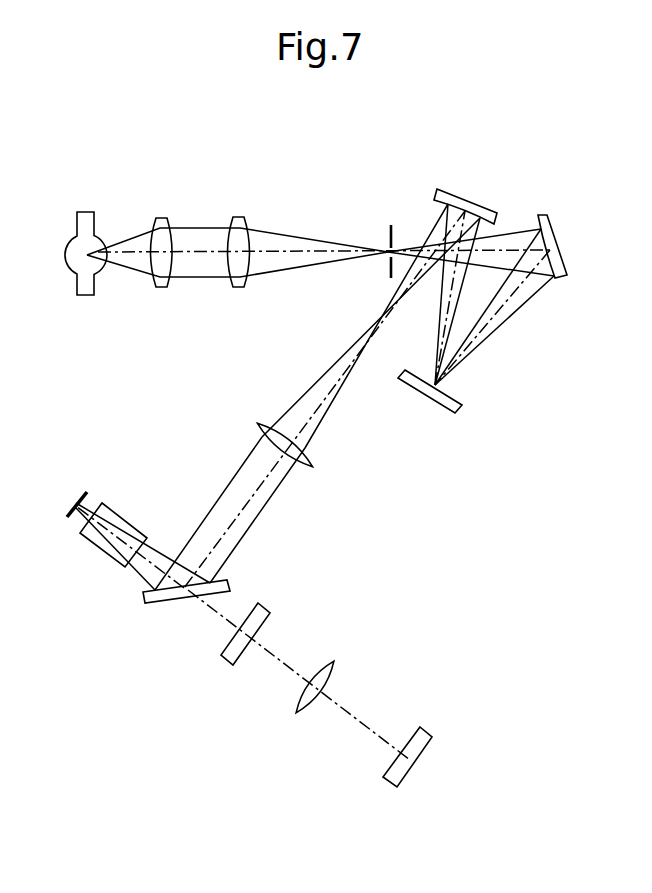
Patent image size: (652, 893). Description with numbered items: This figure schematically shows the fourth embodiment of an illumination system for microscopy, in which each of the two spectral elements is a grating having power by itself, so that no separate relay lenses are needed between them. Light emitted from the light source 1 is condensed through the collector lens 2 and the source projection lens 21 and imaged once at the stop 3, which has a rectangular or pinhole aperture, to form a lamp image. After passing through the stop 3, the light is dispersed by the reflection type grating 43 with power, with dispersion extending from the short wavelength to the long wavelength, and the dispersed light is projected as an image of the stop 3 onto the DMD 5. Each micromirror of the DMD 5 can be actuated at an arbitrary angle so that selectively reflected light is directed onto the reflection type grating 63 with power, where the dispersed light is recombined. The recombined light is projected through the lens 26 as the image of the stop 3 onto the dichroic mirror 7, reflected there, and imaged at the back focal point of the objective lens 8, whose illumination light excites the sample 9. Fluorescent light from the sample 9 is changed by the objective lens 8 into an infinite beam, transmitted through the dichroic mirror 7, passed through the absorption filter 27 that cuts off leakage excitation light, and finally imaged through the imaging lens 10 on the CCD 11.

The light source 1 is at (88, 219).
The collector lens 2 is at (160, 238).
The source projection lens 21 is at (241, 233).
The stop 3 is at (391, 238).
The second spectral element (reflection type grating with power) 63 is at (490, 212).
The first spectral element (reflection type grating with power) 43 is at (549, 228).
The DMD 5 is at (428, 397).
The lens 26 is at (298, 458).
The sample 9 is at (63, 517).
The objective lens 8 is at (118, 547).
The dichroic mirror 7 is at (185, 597).
The absorption filter 27 is at (260, 621).
The imaging lens 10 is at (327, 672).
The CCD 11 is at (415, 745).